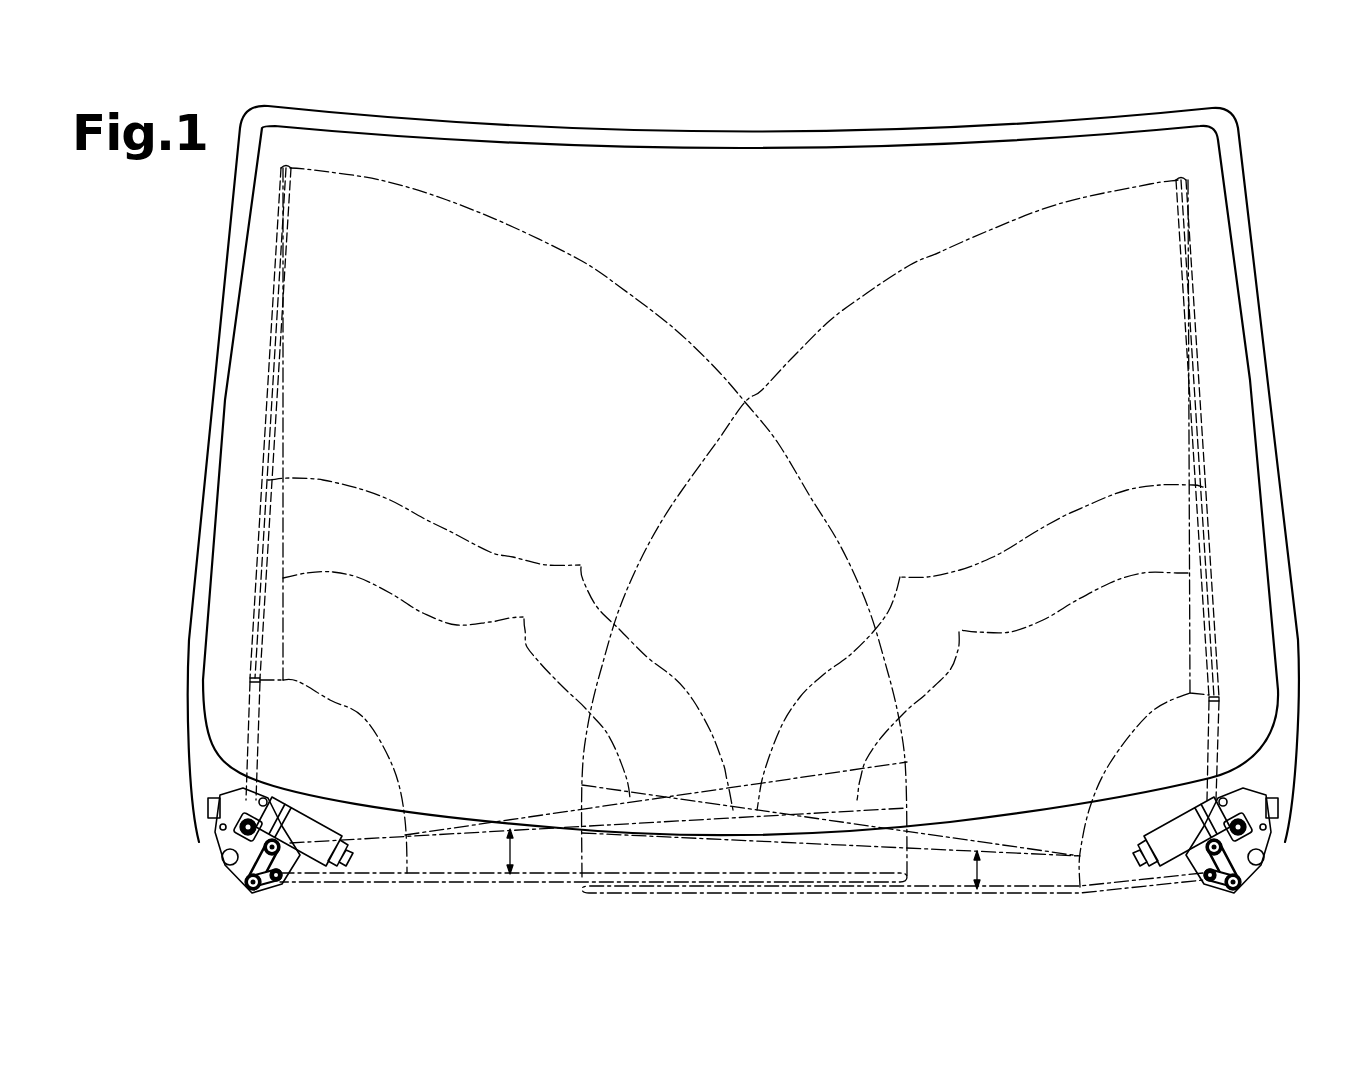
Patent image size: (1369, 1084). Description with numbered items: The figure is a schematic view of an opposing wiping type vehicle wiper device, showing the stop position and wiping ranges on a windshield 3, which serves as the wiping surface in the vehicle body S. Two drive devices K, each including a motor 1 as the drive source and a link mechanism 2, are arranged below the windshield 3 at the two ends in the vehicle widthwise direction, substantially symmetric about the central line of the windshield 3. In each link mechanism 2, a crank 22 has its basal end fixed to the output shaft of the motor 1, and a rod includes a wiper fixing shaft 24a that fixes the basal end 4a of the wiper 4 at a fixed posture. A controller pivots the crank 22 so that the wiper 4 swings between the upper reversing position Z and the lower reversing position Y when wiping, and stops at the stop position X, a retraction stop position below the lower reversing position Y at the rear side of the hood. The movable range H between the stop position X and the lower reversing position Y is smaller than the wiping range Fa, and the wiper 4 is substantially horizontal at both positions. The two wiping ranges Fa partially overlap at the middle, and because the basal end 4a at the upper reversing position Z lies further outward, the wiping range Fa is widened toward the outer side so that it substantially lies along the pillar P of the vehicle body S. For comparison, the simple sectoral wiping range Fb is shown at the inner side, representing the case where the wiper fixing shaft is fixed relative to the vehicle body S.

The motor 1 is at (328, 810).
The link mechanism 2 is at (233, 880).
The windshield 3 is at (756, 341).
The wiper 4 is at (257, 607).
The basal end (arm head) 4a is at (237, 790).
The crank 22 is at (273, 805).
The wiper fixing shaft 24a is at (278, 884).
The drive device K is at (204, 807).
The pillar P is at (213, 441).
The vehicle body S is at (1293, 703).
The upper reversing position Z is at (266, 514).
The wiping range Fa is at (580, 567).
The wiping range Fb is at (523, 617).
The stop position X is at (632, 877).
The lower reversing position Y is at (657, 825).
The movable range H is at (513, 851).